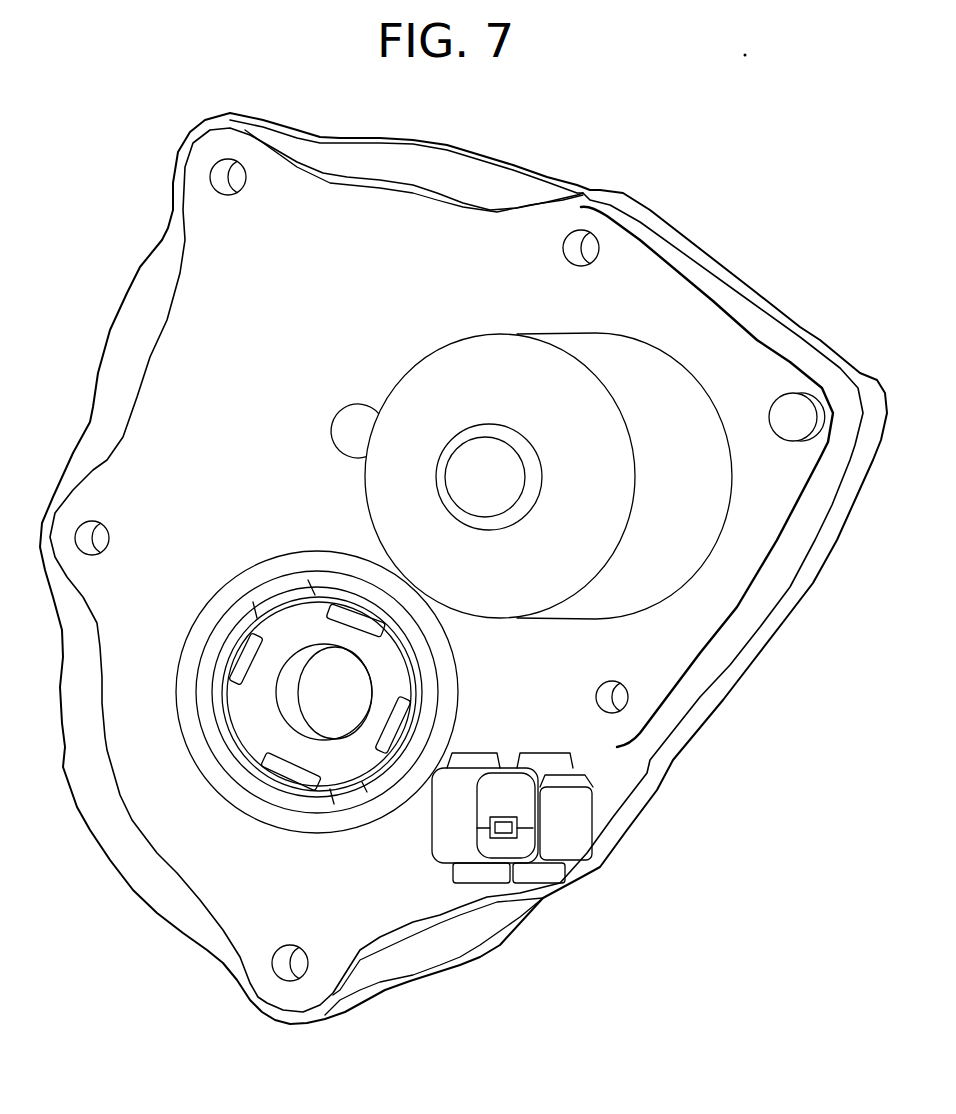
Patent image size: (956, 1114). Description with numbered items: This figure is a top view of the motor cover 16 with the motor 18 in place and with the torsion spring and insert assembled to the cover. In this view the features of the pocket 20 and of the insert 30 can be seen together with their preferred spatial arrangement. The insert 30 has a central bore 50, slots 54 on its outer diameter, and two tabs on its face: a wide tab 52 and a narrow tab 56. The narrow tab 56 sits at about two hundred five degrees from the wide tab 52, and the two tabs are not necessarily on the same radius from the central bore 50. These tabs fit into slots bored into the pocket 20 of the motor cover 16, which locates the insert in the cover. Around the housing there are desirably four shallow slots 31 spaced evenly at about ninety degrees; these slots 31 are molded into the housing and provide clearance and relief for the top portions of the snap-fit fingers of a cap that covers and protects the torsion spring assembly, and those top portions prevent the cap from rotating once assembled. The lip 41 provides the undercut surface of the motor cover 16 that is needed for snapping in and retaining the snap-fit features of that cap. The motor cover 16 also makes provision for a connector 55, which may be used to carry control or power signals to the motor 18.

The motor cover 16 is at (812, 502).
The motor 18 is at (476, 378).
The pocket 20 is at (215, 700).
The insert 30 is at (390, 675).
The shallow slots 31 is at (353, 612).
The lip 41 is at (205, 658).
The central bore 50 is at (325, 700).
The wide tab 52 is at (283, 597).
The slots 54 is at (400, 728).
The connector 55 is at (557, 843).
The narrow tab 56 is at (348, 792).